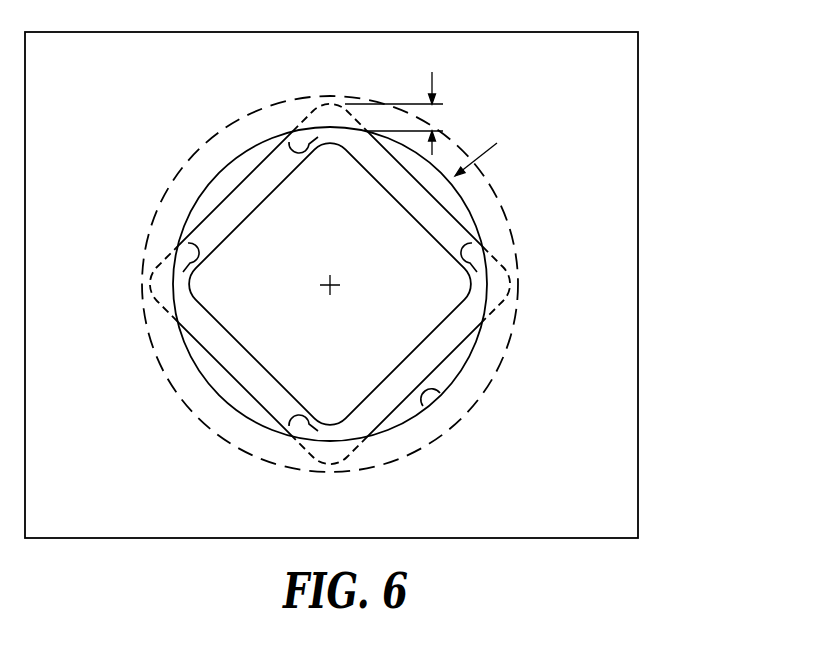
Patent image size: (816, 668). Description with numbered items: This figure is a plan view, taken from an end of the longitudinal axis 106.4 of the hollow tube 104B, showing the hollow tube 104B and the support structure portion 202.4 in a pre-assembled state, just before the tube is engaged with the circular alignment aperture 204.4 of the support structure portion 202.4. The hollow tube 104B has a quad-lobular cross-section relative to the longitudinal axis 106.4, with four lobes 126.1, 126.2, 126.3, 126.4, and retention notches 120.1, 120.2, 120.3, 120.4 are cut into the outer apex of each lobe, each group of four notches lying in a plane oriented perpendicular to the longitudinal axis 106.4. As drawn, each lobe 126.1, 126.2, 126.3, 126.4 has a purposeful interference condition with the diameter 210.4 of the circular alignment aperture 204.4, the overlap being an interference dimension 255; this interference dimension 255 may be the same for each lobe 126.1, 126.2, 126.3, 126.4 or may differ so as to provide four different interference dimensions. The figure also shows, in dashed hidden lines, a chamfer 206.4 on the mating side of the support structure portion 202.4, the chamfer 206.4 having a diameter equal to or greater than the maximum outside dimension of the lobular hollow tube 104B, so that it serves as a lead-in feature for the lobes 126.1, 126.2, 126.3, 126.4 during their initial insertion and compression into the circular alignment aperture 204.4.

The hollow tube 104B is at (452, 360).
The longitudinal axis 106.4 is at (328, 292).
The retention notch 120.1 is at (291, 142).
The retention notch 120.2 is at (471, 243).
The retention notch 120.3 is at (288, 432).
The retention notch 120.4 is at (182, 250).
The lobe 126.1 is at (331, 104).
The lobe 126.2 is at (512, 284).
The lobe 126.3 is at (332, 466).
The lobe 126.4 is at (152, 290).
The support structure portion 202.4 is at (639, 160).
The circular alignment aperture 204.4 is at (440, 397).
The chamfer 206.4 is at (188, 158).
The diameter 210.4 is at (208, 388).
The interference dimension 255 is at (432, 72).